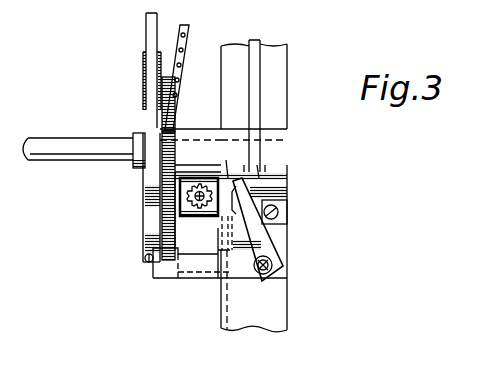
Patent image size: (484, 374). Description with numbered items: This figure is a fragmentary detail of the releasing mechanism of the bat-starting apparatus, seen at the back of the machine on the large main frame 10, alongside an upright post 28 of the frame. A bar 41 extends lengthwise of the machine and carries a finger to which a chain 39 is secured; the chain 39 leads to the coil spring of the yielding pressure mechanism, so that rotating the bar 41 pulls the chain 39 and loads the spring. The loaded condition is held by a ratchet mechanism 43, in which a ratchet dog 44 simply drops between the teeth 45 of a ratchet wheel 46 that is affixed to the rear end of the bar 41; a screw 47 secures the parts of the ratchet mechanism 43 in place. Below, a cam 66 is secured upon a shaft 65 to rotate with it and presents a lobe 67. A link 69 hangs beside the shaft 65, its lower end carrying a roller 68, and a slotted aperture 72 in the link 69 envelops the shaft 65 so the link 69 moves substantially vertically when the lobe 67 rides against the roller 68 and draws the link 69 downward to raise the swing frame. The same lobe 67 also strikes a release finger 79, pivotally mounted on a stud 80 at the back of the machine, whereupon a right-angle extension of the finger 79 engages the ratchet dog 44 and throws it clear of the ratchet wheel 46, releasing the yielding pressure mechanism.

The main frame 10 is at (288, 308).
The post 28 is at (274, 86).
The chain 39 is at (188, 40).
The bar 41 is at (200, 178).
The ratchet mechanism 43 is at (285, 238).
The ratchet dog 44 is at (272, 247).
The teeth 45 is at (244, 213).
The ratchet wheel 46 is at (198, 212).
The screw 47 is at (274, 199).
The shaft 65 is at (66, 146).
The cam 66 is at (175, 112).
The lobe 67 is at (146, 190).
The roller 68 is at (158, 222).
The link 69 is at (146, 32).
The slotted aperture 72 is at (134, 81).
The finger 79 is at (192, 268).
The stud 80 is at (146, 260).